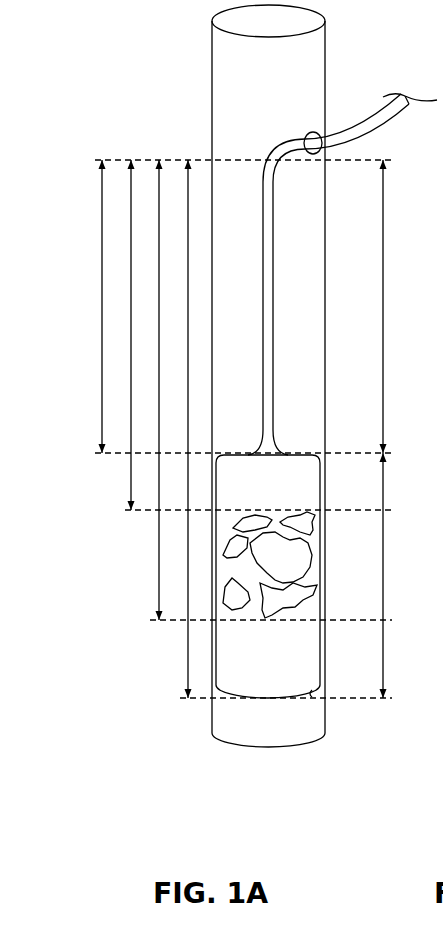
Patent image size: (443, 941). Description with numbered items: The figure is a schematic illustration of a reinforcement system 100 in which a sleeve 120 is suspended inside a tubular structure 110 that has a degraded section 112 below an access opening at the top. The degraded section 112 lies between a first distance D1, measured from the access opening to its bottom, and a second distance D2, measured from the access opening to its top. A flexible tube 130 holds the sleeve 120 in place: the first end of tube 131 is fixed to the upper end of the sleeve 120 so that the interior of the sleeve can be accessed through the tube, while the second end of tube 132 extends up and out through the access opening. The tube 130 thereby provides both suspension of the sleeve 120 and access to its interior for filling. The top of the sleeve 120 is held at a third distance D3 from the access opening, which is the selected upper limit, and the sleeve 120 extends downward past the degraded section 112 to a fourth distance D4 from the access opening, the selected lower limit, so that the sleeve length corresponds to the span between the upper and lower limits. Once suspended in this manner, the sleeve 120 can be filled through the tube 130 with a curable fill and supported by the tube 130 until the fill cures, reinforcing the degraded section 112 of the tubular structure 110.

The reinforcement system 100 is at (147, 45).
The tubular structure 110 is at (212, 121).
The degraded section 112 is at (320, 520).
The sleeve 120 is at (320, 612).
The tube 130 is at (273, 312).
The first end of tube 131 is at (312, 693).
The second end of tube 132 is at (410, 102).
The first distance D1 is at (159, 587).
The second distance D2 is at (131, 490).
The third distance D3 is at (102, 342).
The fourth distance D4 is at (188, 673).